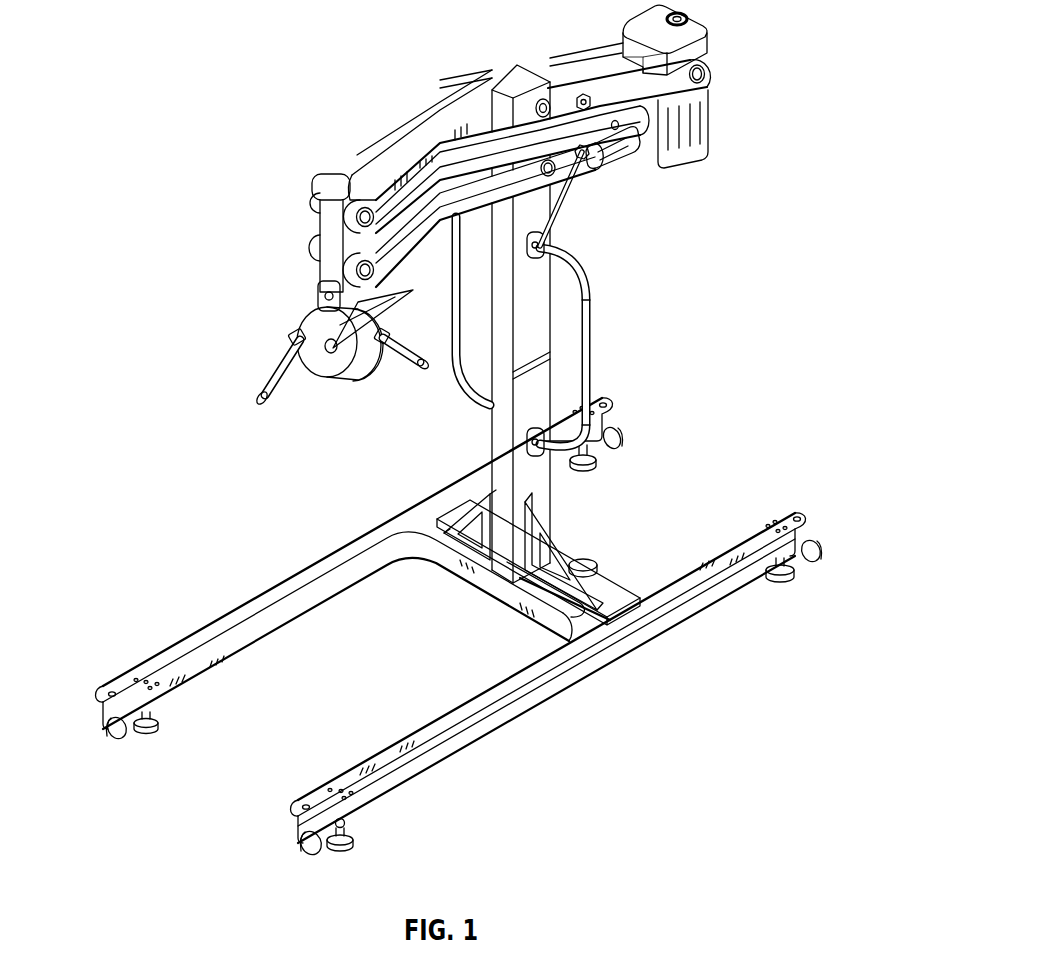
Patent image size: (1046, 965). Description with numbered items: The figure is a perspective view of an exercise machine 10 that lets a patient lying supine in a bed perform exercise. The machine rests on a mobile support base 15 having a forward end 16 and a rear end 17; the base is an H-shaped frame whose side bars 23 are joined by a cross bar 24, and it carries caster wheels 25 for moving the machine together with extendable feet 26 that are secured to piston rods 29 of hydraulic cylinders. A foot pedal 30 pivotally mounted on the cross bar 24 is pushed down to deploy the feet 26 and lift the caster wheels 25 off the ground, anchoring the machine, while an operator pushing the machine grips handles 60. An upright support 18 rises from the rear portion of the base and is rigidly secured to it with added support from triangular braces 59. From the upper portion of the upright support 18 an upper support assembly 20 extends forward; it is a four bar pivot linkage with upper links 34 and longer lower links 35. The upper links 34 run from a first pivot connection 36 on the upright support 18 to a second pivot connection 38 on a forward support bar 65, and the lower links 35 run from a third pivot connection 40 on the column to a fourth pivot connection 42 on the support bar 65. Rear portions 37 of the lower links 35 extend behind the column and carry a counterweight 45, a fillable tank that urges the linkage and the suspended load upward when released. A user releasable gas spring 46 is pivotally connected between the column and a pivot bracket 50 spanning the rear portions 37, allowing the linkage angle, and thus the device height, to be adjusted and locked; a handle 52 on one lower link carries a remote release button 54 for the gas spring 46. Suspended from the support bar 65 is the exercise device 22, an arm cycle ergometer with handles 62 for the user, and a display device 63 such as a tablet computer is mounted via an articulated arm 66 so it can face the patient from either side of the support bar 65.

The exercise machine 10 is at (268, 154).
The mobile support base 15 is at (456, 623).
The forward end 16 is at (98, 703).
The rear end 17 is at (612, 405).
The upright support 18 is at (532, 342).
The upper support assembly 20 is at (502, 146).
The exercise device 22 is at (346, 346).
The side bars 23 is at (208, 642).
The cross bar 24 is at (512, 598).
The caster wheels 25 is at (123, 735).
The feet 26 is at (160, 726).
The piston rods 29 is at (345, 825).
The foot pedal 30 is at (592, 566).
The upper links 34 is at (407, 170).
The lower links 35 is at (393, 262).
The first pivot connection 36 is at (538, 102).
The rear portions 37 is at (605, 77).
The second pivot connection 38 is at (318, 185).
The third pivot connection 40 is at (556, 172).
The fourth pivot connection 42 is at (330, 268).
The counterweight 45 is at (689, 18).
The gas spring 46 is at (565, 236).
The pivot bracket 50 is at (580, 96).
The handle 52 is at (612, 156).
The remote release button 54 is at (632, 165).
The triangular braces 59 is at (468, 512).
The handles 60 is at (590, 290).
The handles 62 is at (285, 390).
The display device 63 is at (403, 315).
The support bar 65 is at (318, 204).
The articulated arm 66 is at (318, 288).